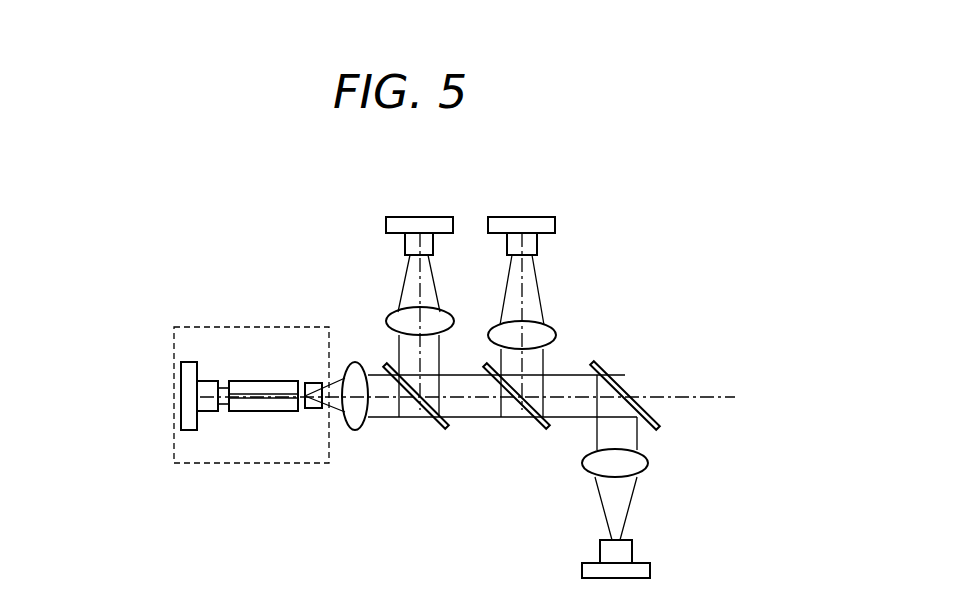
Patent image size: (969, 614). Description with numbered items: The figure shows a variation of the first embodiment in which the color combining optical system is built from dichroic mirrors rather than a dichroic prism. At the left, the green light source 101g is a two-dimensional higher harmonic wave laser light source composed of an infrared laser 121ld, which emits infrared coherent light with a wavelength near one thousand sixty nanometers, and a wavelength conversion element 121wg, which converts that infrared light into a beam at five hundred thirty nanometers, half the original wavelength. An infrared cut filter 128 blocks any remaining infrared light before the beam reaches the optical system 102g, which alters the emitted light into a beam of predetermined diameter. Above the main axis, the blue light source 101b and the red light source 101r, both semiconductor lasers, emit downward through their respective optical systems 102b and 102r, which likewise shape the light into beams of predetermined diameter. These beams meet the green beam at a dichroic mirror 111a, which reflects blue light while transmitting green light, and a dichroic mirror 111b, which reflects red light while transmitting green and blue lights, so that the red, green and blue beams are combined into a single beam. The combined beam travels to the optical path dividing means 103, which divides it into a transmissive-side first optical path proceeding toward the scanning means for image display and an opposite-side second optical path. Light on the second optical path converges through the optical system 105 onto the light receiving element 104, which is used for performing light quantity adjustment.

The light source 101g is at (175, 318).
The infrared laser 121ld is at (188, 412).
The wavelength conversion element 121wg is at (253, 381).
The infrared cut filter 128 is at (317, 410).
The optical system 102g is at (343, 376).
The dichroic mirror 111a is at (412, 403).
The dichroic mirror 111b is at (517, 403).
The light source 101b is at (428, 217).
The optical system 102b is at (398, 314).
The light source 101r is at (530, 217).
The optical system 102r is at (545, 332).
The optical path dividing means 103 is at (607, 372).
The optical system 105 is at (648, 465).
The light receiving element 104 is at (632, 550).